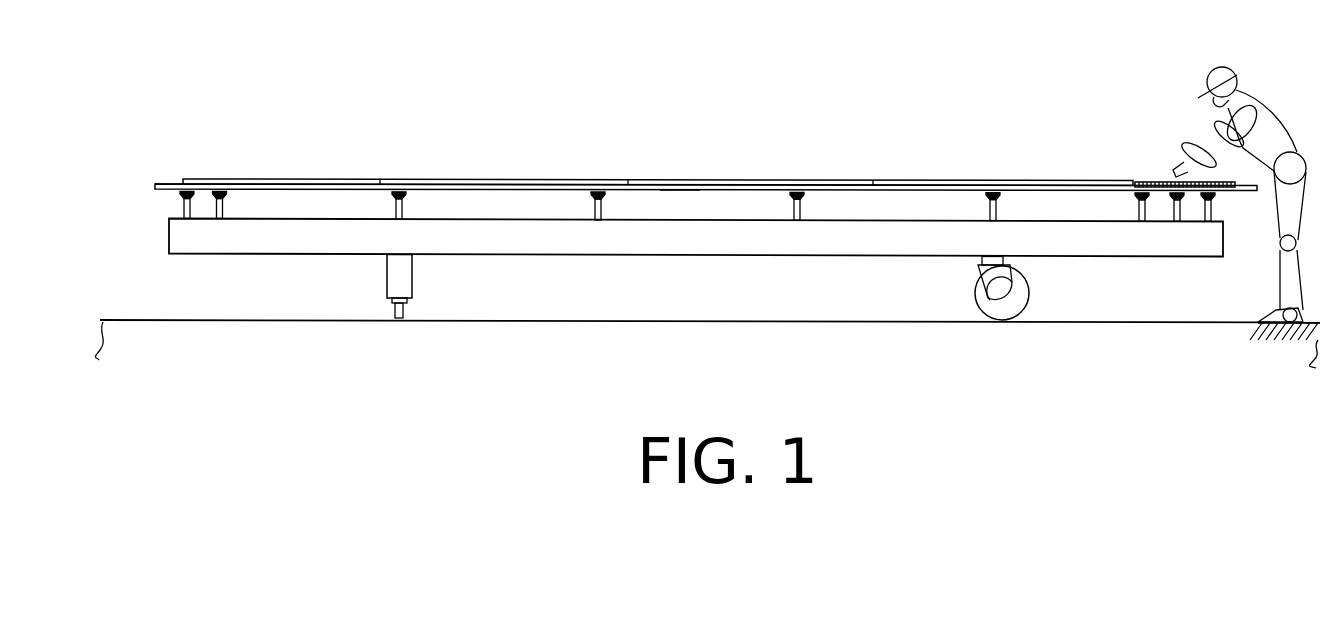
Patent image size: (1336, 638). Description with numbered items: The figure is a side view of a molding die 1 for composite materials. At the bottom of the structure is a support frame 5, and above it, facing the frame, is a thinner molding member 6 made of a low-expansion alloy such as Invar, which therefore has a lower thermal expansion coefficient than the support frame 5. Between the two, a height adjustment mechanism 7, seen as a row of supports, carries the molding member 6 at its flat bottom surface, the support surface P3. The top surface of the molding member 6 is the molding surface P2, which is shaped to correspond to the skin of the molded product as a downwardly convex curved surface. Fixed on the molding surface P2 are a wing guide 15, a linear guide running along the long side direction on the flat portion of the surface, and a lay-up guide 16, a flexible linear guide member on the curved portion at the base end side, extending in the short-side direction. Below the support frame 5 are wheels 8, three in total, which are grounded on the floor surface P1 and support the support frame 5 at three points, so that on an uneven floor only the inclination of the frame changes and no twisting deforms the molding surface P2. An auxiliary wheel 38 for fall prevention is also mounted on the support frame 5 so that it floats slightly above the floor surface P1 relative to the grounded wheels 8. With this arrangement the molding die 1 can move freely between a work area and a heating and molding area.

The molding die 1 is at (654, 72).
The support frame 5 is at (169, 237).
The molding member 6 is at (161, 183).
The height adjustment mechanism 7 is at (182, 212).
The wheels 8 is at (1028, 297).
The wing guide 15 is at (560, 178).
The lay-up guide 16 is at (1150, 184).
The auxiliary wheel 38 is at (412, 286).
The floor surface P1 is at (717, 322).
The molding surface P2 is at (168, 184).
The support surface P3 is at (683, 192).